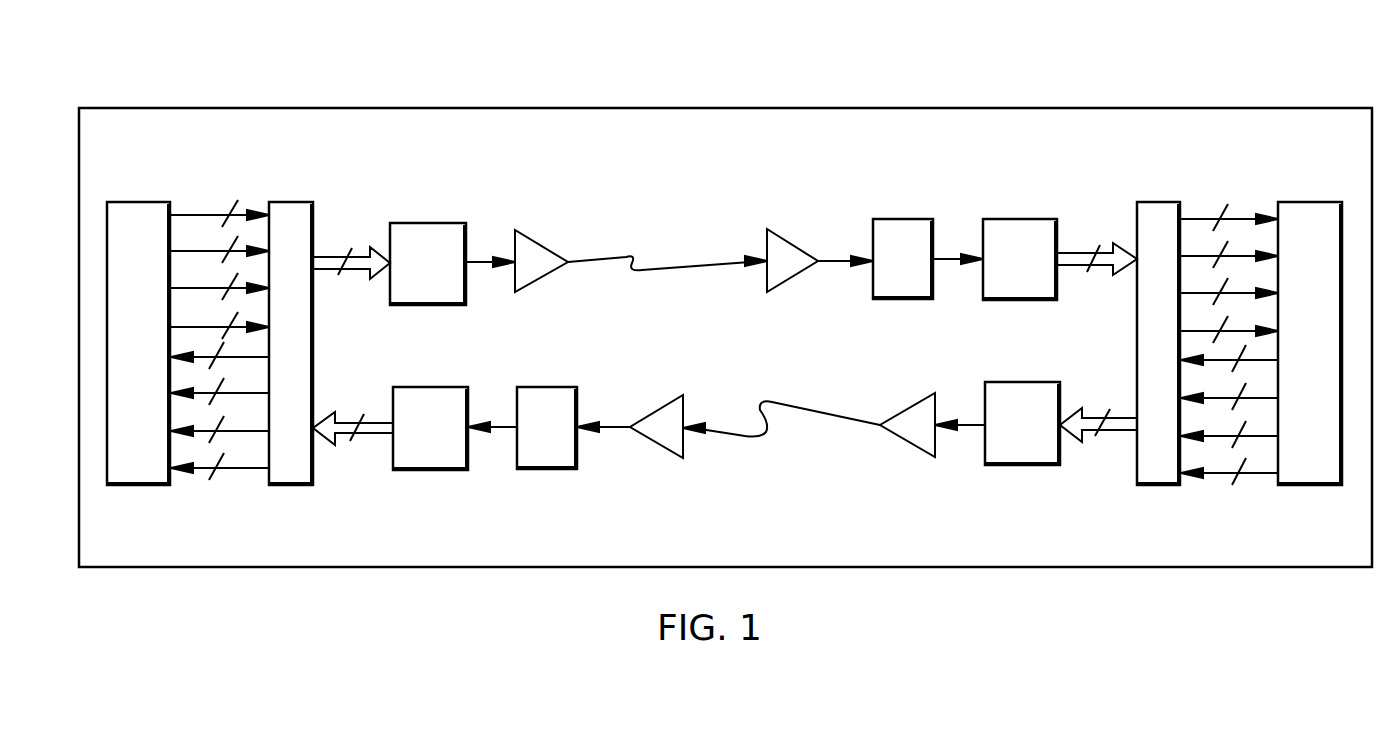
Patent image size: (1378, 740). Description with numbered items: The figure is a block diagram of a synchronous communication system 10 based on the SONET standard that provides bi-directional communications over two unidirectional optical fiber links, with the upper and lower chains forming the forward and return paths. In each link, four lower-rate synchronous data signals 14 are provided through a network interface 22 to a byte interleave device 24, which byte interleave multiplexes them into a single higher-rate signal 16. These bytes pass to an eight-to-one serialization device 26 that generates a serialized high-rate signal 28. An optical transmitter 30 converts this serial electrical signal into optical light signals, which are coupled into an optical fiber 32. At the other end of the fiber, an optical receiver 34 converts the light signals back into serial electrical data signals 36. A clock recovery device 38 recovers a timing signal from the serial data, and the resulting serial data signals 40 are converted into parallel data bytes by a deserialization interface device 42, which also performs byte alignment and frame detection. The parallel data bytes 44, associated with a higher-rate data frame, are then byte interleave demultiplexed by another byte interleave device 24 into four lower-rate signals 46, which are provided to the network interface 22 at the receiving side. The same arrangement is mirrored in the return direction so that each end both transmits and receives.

The synchronous communication system 10 is at (762, 108).
The OC-12 signals 14 is at (184, 196).
The OC-48 signal 16 is at (353, 230).
The network interface 22 is at (155, 304).
The byte interleave device 24 is at (307, 304).
The serialization device 26 is at (444, 276).
The serialized OC-48 signal 28 is at (482, 238).
The optical transmitter 30 is at (548, 274).
The optical fiber 32 is at (691, 256).
The optical receiver 34 is at (799, 272).
The serial electrical data signals 36 is at (852, 230).
The clock recovery device 38 is at (918, 271).
The serial data signals 40 is at (953, 228).
The deserialization interface device 42 is at (1036, 271).
The OC-48 parallel data bytes 44 is at (1103, 218).
The OC-12 signals 46 is at (222, 500).